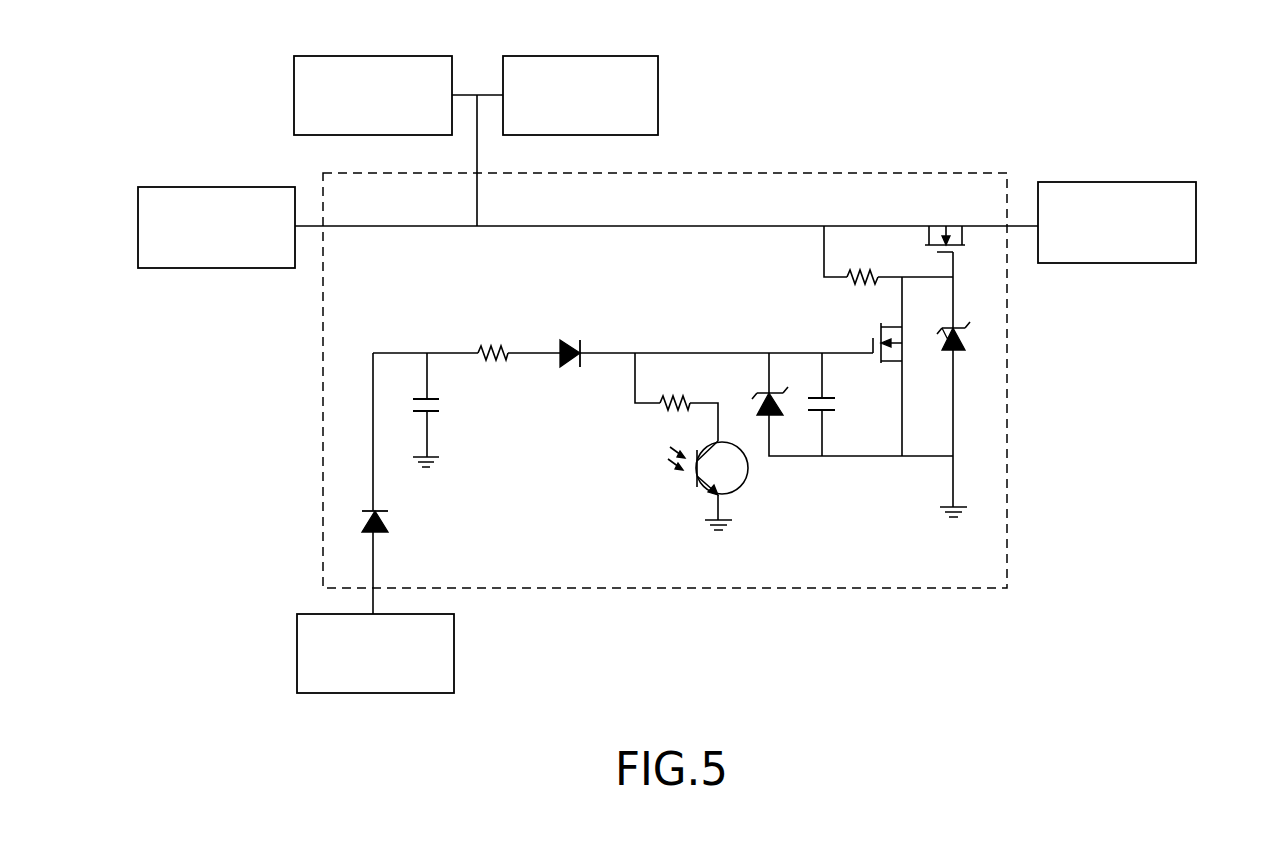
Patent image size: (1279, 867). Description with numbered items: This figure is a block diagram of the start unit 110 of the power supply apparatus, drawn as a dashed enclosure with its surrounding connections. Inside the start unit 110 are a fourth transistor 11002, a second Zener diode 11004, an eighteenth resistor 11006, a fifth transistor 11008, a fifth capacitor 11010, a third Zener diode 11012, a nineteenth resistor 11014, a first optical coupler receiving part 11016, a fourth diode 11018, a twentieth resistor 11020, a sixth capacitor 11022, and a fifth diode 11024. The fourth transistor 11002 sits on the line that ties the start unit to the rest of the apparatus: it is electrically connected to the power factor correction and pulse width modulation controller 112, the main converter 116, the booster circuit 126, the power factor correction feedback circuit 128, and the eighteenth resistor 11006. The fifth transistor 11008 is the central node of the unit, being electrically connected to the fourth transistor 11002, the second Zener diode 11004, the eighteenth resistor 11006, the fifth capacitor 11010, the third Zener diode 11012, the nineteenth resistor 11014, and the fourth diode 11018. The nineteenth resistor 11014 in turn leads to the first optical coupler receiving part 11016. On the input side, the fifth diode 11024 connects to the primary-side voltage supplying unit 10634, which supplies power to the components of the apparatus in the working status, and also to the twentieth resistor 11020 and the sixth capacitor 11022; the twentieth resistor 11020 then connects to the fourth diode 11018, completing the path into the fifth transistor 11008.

The booster circuit 126 is at (372, 62).
The main converter 116 is at (582, 62).
The power factor correction feedback circuit 128 is at (217, 193).
The power factor correction and pulse width modulation controller 112 is at (1117, 185).
The start unit 110 is at (1007, 532).
The primary-side voltage supplying unit 10634 is at (301, 652).
The fourth transistor 11002 is at (938, 223).
The second Zener diode 11004 is at (966, 334).
The eighteenth resistor 11006 is at (848, 278).
The fifth transistor 11008 is at (873, 336).
The fifth capacitor 11010 is at (837, 405).
The third Zener diode 11012 is at (757, 403).
The nineteenth resistor 11014 is at (658, 404).
The first optical coupler receiving part 11016 is at (727, 472).
The fourth diode 11018 is at (575, 340).
The twentieth resistor 11020 is at (497, 342).
The sixth capacitor 11022 is at (441, 408).
The fifth diode 11024 is at (389, 518).